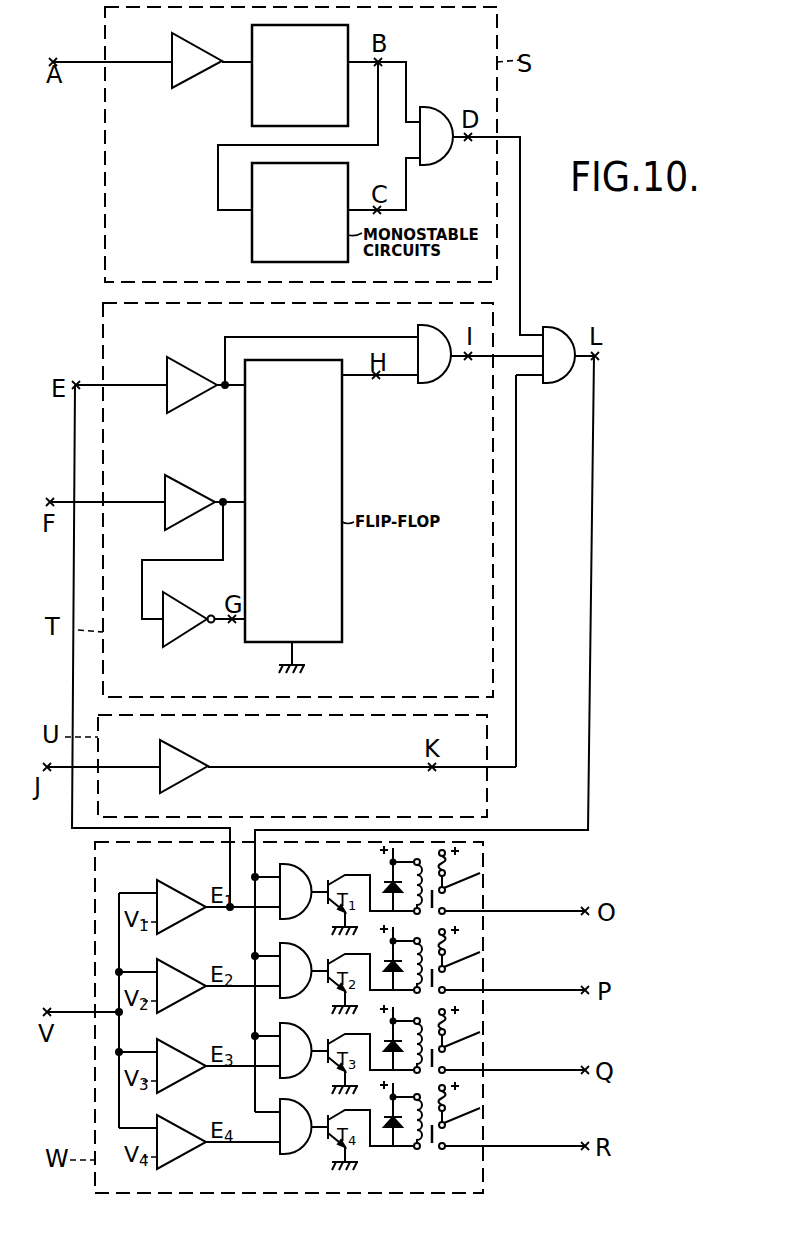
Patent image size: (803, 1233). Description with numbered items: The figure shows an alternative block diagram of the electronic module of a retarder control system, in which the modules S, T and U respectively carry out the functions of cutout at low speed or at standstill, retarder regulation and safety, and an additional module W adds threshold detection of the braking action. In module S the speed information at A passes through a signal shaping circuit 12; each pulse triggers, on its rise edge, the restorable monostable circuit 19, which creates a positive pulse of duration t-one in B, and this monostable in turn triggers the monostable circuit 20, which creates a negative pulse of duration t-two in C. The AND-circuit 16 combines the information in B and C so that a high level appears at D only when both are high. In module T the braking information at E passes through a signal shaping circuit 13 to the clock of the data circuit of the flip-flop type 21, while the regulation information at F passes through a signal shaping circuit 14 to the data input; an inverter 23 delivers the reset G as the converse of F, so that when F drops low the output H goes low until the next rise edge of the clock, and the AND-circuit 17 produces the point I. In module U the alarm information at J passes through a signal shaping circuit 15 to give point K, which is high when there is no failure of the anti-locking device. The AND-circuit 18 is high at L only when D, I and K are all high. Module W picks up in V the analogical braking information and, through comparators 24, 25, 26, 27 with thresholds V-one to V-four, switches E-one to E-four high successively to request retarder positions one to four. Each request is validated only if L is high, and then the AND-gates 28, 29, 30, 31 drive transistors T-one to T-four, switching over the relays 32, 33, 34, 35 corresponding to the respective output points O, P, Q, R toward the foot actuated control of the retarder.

The signal shaping circuit 12 is at (190, 68).
The signal shaping circuit 13 is at (188, 392).
The signal shaping circuit 14 is at (186, 510).
The signal shaping circuit 15 is at (182, 760).
The AND-circuit 16 is at (437, 145).
The AND-circuit 17 is at (436, 360).
The AND-circuit 18 is at (553, 335).
The restorable monostable circuit 19 is at (315, 82).
The restorable monostable circuit 20 is at (313, 219).
The data circuit of the flip-flop type 21 is at (307, 506).
The inverter 23 is at (185, 622).
The comparator 24 is at (197, 903).
The comparator 25 is at (168, 975).
The comparator 26 is at (168, 1055).
The comparator 27 is at (168, 1131).
The AND-gate 28 is at (300, 885).
The AND-gate 29 is at (308, 960).
The AND-gate 30 is at (308, 1040).
The AND-gate 31 is at (308, 1116).
The relay 32 is at (480, 873).
The relay 33 is at (472, 959).
The relay 34 is at (472, 1039).
The relay 35 is at (472, 1115).